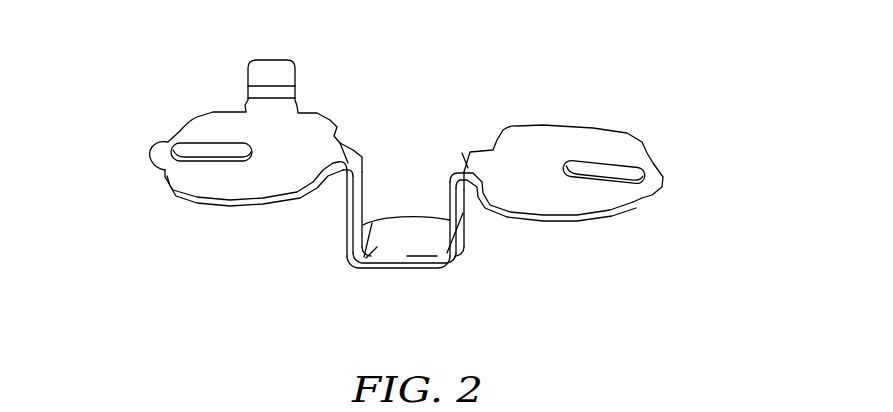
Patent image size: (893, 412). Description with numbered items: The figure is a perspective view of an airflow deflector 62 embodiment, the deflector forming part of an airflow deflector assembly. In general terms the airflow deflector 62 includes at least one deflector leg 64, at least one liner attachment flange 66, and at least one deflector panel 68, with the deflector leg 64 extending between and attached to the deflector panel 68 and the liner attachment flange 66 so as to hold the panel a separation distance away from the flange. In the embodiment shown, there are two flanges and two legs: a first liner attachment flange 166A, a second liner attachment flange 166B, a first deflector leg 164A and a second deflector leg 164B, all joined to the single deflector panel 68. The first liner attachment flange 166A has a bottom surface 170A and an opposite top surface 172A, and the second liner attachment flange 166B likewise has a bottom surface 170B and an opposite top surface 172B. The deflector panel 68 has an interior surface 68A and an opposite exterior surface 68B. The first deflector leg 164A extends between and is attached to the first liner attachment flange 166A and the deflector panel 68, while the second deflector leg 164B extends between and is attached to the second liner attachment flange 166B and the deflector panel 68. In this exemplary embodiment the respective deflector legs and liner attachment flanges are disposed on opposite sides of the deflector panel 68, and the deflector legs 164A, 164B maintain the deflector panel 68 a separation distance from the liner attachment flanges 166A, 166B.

The airflow deflector 62 is at (712, 123).
The deflector leg 64 is at (441, 186).
The liner attachment flange 66 is at (398, 170).
The first liner attachment flange 166A is at (219, 106).
The second liner attachment flange 166B is at (604, 123).
The deflector panel 68 is at (363, 267).
The interior surface 68A is at (440, 263).
The exterior surface 68B is at (405, 270).
The first deflector leg 164A is at (346, 210).
The second deflector leg 164B is at (466, 223).
The bottom surface 170A is at (183, 210).
The bottom surface 170B is at (603, 225).
The top surface 172A is at (163, 170).
The top surface 172B is at (615, 203).